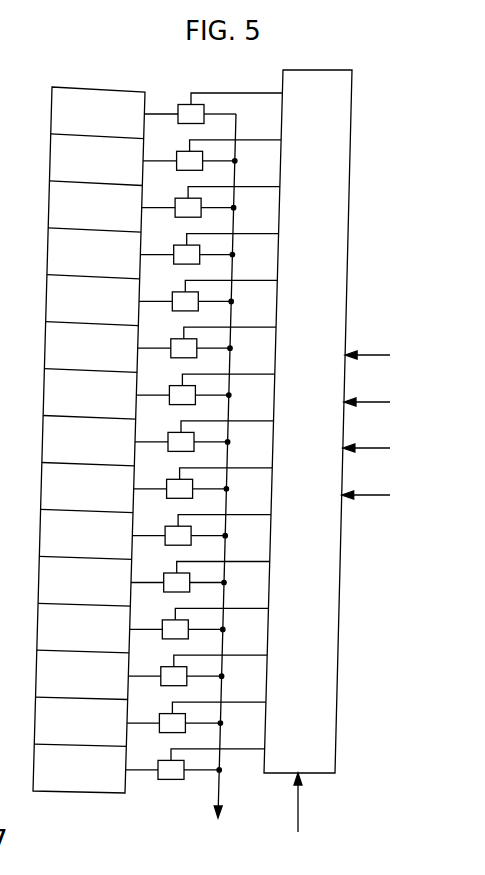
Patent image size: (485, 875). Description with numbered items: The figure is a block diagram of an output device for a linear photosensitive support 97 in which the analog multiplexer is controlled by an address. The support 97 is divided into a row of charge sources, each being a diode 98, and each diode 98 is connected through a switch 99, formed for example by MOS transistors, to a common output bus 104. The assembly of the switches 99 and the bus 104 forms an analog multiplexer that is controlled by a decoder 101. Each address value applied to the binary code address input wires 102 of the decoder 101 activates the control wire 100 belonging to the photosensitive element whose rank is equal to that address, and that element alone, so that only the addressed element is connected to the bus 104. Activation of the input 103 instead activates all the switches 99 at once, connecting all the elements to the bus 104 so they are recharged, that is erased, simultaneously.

The linear photosensitive support 97 is at (84, 78).
The diode 98 is at (103, 167).
The switch 99 is at (174, 201).
The control wire 100 is at (250, 186).
The decoder 101 is at (331, 177).
The binary code address input wires 102 is at (367, 400).
The input 103 is at (305, 815).
The common output bus 104 is at (219, 485).